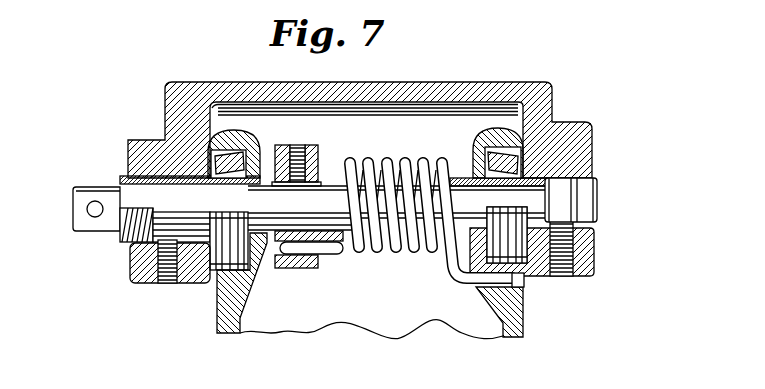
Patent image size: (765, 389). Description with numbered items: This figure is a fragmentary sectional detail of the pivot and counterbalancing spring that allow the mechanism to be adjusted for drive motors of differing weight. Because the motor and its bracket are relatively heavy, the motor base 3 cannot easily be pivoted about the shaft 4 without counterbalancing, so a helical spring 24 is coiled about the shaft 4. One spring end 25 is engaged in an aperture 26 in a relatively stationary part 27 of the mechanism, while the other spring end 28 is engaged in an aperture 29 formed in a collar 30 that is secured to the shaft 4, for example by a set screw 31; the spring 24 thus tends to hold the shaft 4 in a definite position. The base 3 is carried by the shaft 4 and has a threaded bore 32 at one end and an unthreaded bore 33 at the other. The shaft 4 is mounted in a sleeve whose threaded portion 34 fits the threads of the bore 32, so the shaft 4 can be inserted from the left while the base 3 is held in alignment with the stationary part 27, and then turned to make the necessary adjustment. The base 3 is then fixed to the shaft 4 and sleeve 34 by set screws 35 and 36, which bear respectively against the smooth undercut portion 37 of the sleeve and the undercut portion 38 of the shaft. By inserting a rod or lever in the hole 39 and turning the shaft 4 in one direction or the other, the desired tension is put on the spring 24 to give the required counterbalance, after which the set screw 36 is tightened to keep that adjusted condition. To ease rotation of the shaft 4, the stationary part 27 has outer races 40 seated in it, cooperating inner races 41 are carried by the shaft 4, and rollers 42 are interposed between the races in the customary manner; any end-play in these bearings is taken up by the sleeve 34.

The motor base 3 is at (556, 112).
The shaft 4 is at (80, 220).
The helical spring 24 is at (413, 248).
The spring end 25 is at (498, 282).
The aperture 26 is at (524, 282).
The relatively stationary part 27 is at (233, 334).
The spring end 28 is at (327, 252).
The aperture 29 is at (252, 240).
The collar 30 is at (310, 170).
The set screw 31 is at (320, 178).
The threaded bore 32 is at (142, 180).
The unthreaded bore 33 is at (565, 160).
The sleeve threaded portion 34 is at (127, 243).
The set screw 35 is at (166, 283).
The set screw 36 is at (594, 238).
The undercut portion of sleeve 37 is at (150, 152).
The undercut portion of shaft 38 is at (563, 203).
The hole 39 is at (92, 216).
The outer races 40 is at (243, 153).
The inner races 41 is at (228, 174).
The rollers 42 is at (205, 148).